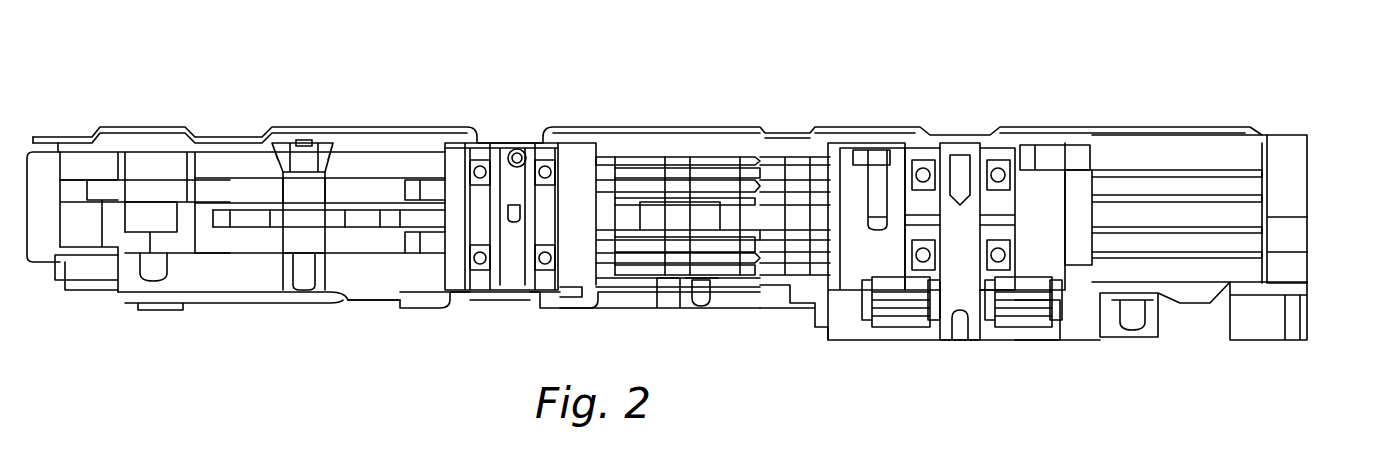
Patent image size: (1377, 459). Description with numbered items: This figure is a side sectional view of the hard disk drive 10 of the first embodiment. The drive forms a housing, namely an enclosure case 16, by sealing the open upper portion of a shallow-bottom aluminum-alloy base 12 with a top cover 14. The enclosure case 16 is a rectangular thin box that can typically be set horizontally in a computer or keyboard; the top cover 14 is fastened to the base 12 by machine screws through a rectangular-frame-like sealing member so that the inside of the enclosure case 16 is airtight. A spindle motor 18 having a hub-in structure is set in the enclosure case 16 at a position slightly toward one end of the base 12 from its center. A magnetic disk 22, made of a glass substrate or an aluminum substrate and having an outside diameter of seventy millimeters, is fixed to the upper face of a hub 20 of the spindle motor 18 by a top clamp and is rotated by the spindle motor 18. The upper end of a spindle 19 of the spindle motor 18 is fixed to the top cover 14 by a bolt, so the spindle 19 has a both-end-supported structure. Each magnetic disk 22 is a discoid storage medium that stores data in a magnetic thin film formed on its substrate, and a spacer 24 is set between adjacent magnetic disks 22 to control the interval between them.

The hard disk drive 10 is at (642, 104).
The base 12 is at (1253, 300).
The top cover 14 is at (1240, 122).
The enclosure case 16 is at (1300, 80).
The spindle motor 18 is at (1025, 320).
The spindle 19 is at (968, 300).
The hub 20 is at (838, 282).
The magnetic disk 22 is at (782, 165).
The spacer 24 is at (1087, 186).